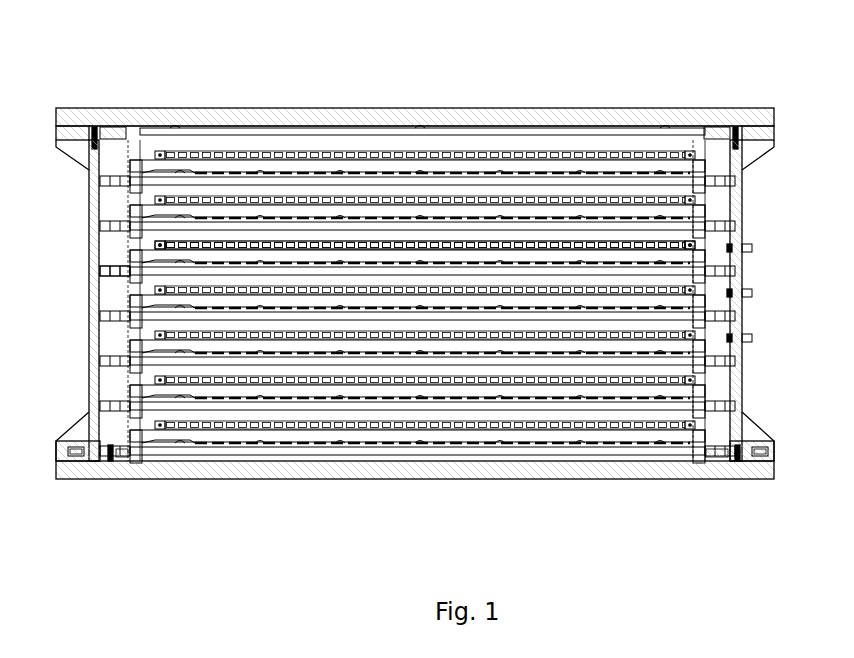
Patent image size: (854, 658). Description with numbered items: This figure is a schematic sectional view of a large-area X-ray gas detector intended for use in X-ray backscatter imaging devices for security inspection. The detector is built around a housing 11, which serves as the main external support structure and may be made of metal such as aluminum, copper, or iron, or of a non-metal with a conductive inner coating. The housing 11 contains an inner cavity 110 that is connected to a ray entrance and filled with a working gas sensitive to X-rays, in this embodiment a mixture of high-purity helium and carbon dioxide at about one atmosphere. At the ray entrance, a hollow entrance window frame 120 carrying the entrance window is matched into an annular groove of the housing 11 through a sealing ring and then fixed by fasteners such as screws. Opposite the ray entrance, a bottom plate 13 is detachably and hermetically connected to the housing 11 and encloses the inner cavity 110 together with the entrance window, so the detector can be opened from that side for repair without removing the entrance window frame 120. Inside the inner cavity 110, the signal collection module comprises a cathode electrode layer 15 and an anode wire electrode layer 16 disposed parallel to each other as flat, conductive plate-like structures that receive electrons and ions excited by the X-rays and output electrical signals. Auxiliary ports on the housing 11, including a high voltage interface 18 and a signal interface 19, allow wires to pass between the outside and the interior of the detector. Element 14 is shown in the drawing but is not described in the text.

The housing 11 is at (89, 183).
The inner cavity 110 is at (120, 282).
The entrance window frame 120 is at (112, 132).
The bottom plate 13 is at (122, 480).
The inner column 14 is at (136, 140).
The cathode electrode layer 15 is at (406, 142).
The anode wire electrode layer 16 is at (526, 172).
The high voltage interface 18 is at (748, 126).
The signal interface 19 is at (752, 248).